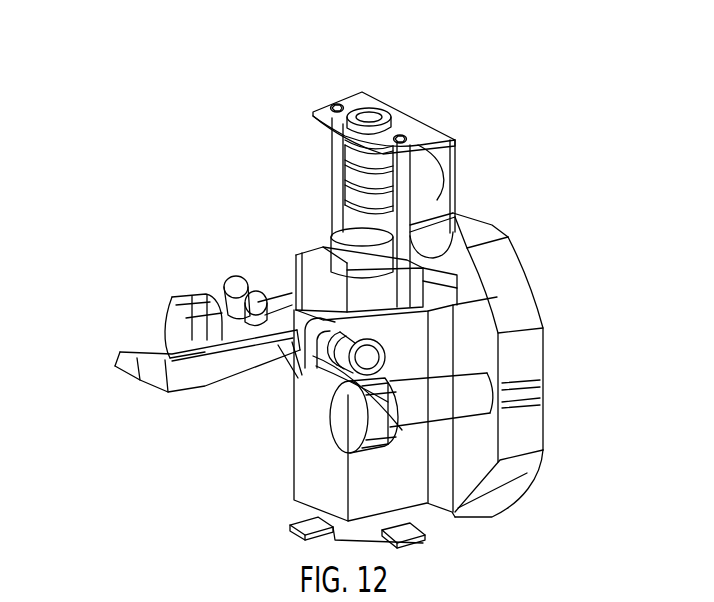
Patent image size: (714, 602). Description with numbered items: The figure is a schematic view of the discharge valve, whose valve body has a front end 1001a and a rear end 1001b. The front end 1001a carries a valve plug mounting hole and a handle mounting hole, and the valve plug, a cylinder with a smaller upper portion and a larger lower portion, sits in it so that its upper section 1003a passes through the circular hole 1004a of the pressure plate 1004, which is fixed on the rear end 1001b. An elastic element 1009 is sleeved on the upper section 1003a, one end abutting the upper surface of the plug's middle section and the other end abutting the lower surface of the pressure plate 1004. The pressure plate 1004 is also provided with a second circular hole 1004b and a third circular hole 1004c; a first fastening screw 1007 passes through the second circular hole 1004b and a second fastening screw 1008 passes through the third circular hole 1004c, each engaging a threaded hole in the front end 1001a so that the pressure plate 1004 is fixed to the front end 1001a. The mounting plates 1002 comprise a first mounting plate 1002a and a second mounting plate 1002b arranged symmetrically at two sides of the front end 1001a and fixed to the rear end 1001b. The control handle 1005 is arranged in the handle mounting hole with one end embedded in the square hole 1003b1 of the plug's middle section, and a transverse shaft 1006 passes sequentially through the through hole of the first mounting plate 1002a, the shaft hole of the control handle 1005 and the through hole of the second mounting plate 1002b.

The front end 1001a is at (305, 500).
The rear end 1001b is at (505, 327).
The mounting plates 1002 is at (160, 470).
The first mounting plate 1002a is at (218, 358).
The second mounting plate 1002b is at (313, 355).
The upper section 1003a is at (312, 111).
The square hole 1003b1 is at (328, 246).
The pressure plate 1004 is at (433, 200).
The circular hole 1004a is at (392, 122).
The second circular hole 1004b is at (338, 104).
The third circular hole 1004c is at (402, 135).
The control handle 1005 is at (165, 355).
The transverse shaft 1006 is at (235, 278).
The first fastening screw 1007 is at (338, 155).
The second fastening screw 1008 is at (481, 213).
The elastic element 1009 is at (348, 189).